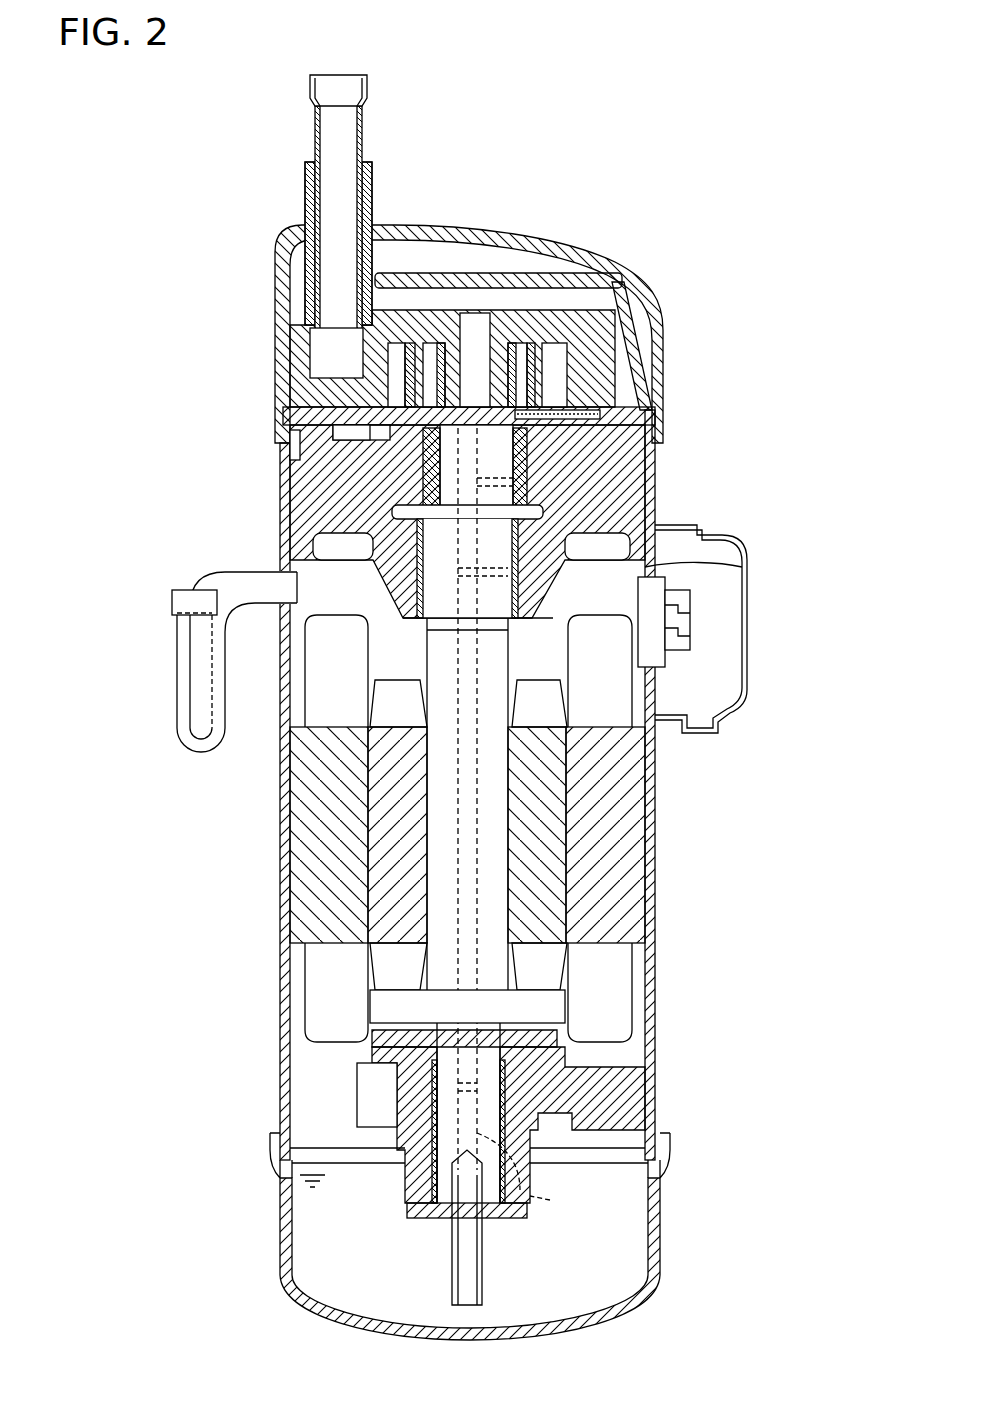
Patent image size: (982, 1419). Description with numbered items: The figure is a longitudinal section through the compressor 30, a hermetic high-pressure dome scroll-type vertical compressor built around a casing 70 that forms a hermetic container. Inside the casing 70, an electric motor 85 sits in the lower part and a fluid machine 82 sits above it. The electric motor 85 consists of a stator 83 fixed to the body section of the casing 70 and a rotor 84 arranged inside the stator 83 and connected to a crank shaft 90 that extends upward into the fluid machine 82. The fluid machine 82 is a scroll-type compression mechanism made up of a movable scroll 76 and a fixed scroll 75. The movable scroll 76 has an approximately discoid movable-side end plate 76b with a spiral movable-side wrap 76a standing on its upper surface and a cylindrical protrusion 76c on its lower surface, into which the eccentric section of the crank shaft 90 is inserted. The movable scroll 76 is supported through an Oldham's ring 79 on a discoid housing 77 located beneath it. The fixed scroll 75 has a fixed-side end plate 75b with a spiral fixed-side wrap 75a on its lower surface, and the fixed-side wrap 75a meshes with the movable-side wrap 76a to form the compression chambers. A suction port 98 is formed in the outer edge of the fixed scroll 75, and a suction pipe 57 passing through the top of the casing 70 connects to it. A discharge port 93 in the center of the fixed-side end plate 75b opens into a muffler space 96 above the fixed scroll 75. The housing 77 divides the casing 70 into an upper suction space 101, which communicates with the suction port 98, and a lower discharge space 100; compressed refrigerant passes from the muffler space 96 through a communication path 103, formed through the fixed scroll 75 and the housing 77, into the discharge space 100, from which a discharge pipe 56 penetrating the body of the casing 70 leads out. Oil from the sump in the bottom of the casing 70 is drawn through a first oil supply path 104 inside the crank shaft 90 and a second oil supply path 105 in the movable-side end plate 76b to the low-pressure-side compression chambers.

The compressor 30 is at (233, 139).
The suction pipe 57 is at (305, 205).
The fixed-side end plate 75b is at (405, 288).
The discharge port 93 is at (470, 310).
The suction space 101 is at (476, 256).
The muffler space 96 is at (500, 300).
The fixed scroll 75 is at (636, 292).
The fluid machine 82 is at (301, 299).
The suction port 98 is at (323, 340).
The movable-side wrap 76a is at (400, 365).
The movable-side end plate 76b is at (335, 410).
The Oldham's ring 79 is at (330, 430).
The movable scroll 76 is at (408, 432).
The fixed-side wrap 75a is at (540, 362).
The communication path 103 is at (656, 410).
The casing 70 is at (662, 478).
The second oil supply path 105 is at (555, 457).
The cylindrical protrusion 76c is at (357, 542).
The housing 77 is at (645, 567).
The discharge space 100 is at (595, 598).
The crank shaft 90 is at (428, 663).
The discharge pipe 56 is at (177, 702).
The rotor 84 is at (375, 828).
The stator 83 is at (295, 877).
The electric motor 85 is at (634, 955).
The first oil supply path 104 is at (525, 1219).